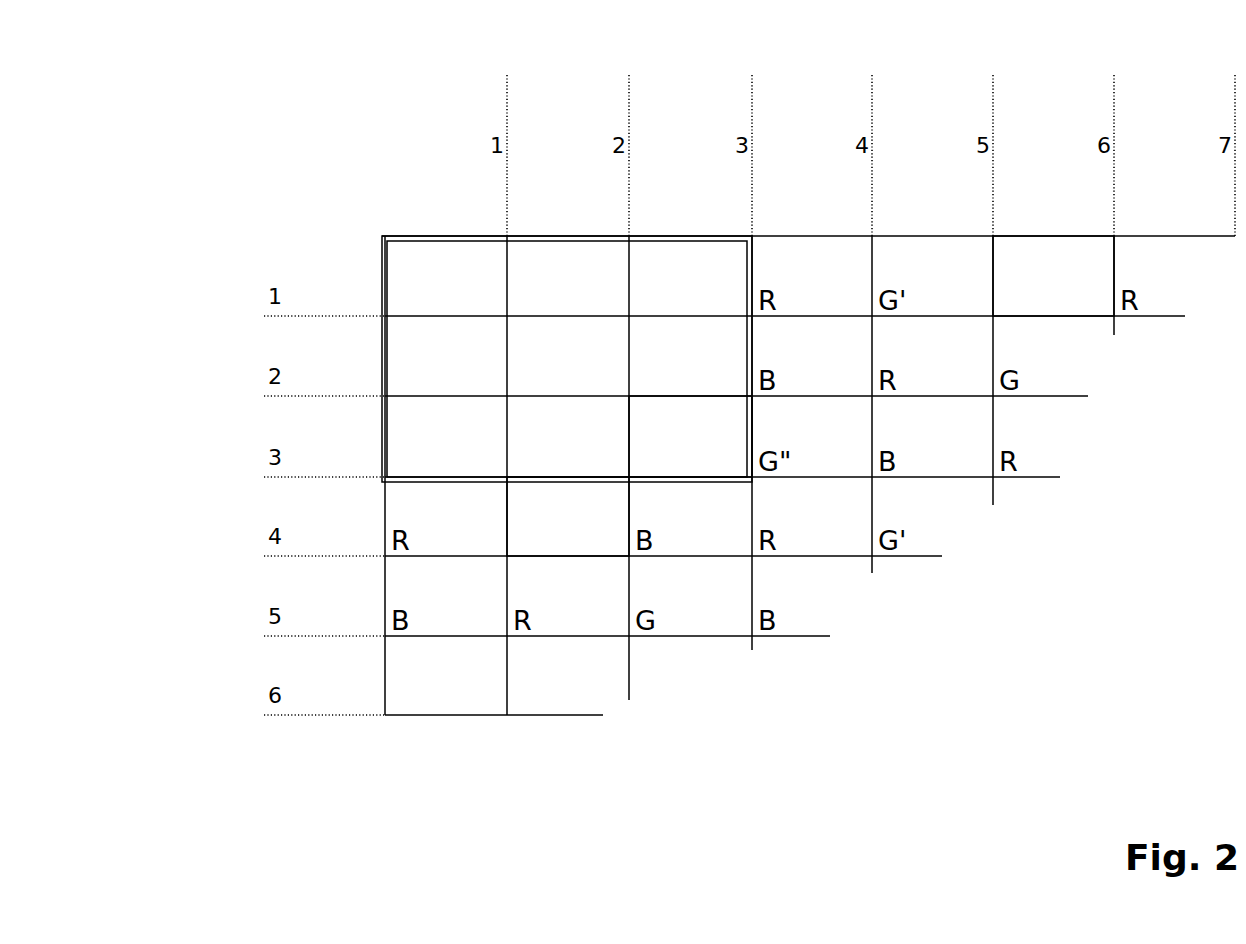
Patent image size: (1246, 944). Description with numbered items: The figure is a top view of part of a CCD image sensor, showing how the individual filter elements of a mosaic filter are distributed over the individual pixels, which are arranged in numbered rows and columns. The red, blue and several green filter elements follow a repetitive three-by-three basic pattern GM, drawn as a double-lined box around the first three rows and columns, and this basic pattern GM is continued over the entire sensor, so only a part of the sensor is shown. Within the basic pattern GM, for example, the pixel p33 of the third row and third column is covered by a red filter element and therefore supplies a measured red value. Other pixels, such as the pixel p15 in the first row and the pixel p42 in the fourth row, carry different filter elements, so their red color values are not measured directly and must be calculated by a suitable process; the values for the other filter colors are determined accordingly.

The basic pattern GM is at (407, 241).
The pixel p15 is at (1021, 252).
The pixel p33 is at (668, 432).
The pixel p42 is at (578, 535).